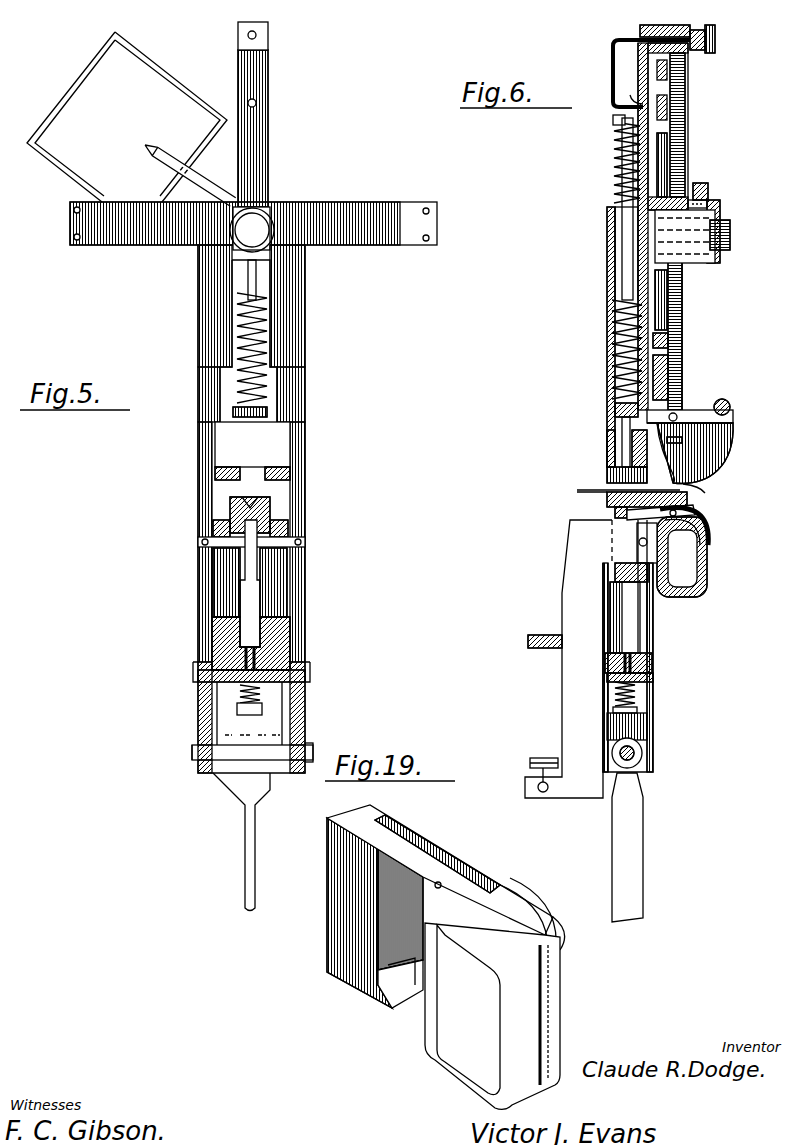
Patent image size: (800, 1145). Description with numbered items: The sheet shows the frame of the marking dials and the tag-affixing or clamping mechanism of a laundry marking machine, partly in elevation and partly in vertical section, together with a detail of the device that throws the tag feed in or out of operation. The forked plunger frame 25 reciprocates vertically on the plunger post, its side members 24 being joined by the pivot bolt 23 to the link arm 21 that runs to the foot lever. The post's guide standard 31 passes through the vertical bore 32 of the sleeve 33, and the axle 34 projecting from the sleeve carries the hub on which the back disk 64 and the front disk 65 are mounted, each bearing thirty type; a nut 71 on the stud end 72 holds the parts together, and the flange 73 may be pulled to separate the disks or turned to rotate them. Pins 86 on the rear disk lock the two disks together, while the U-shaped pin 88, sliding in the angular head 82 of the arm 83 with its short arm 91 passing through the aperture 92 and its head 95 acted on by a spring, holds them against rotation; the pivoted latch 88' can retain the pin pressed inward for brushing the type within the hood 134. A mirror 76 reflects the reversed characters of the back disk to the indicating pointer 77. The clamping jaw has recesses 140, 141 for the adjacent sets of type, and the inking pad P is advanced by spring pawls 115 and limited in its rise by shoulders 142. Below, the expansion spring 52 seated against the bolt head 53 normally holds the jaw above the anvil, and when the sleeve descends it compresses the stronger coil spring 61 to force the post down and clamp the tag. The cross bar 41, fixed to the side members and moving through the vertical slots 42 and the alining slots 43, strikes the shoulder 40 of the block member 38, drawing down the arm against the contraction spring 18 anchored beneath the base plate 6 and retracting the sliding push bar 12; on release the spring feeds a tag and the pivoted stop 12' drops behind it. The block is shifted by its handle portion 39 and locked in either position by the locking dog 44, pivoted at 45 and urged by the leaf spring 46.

In FIG. 6, the base plate 6 is at (535, 640).
In FIG. 6, the sliding push bar 12 is at (622, 475).
In FIG. 6, the pivoted stop 12' is at (613, 442).
In FIG. 6, the contraction spring 18 is at (540, 756).
In FIG. 5, the link arm 21 is at (253, 858).
In FIG. 6, the link arm 21 is at (630, 840).
In FIG. 5, the pivot bolt 23 is at (298, 750).
In FIG. 6, the pivot bolt 23 is at (642, 753).
In FIG. 5, the side members 24 is at (297, 442).
In FIG. 5, the plunger frame 25 is at (290, 270).
In FIG. 5, the guide standard 31 is at (248, 285).
In FIG. 6, the guide standard 31 is at (625, 287).
In FIG. 6, the vertical bore 32 is at (612, 263).
In FIG. 6, the sleeve 33 is at (607, 232).
In FIG. 5, the axle 34 is at (262, 212).
In FIG. 5, the block member 38 is at (240, 513).
In FIG. 19, the block member 38 is at (466, 918).
In FIG. 6, the handle portion 39 is at (708, 577).
In FIG. 19, the handle portion 39 is at (538, 1020).
In FIG. 5, the shoulder 40 is at (253, 570).
In FIG. 6, the shoulder 40 is at (647, 583).
In FIG. 19, the shoulder 40 is at (392, 975).
In FIG. 5, the cross bar 41 is at (273, 542).
In FIG. 6, the cross bar 41 is at (650, 545).
In FIG. 5, the vertical slots 42 is at (230, 630).
In FIG. 6, the vertical slots 42 is at (643, 632).
In FIG. 5, the alining slots 43 is at (222, 592).
In FIG. 5, the locking dog 44 is at (253, 510).
In FIG. 6, the locking dog 44 is at (706, 523).
In FIG. 19, the locking dog 44 is at (520, 897).
In FIG. 6, the pivot 45 is at (690, 509).
In FIG. 19, the pivot 45 is at (440, 880).
In FIG. 6, the leaf spring 46 is at (703, 545).
In FIG. 5, the expansion spring 52 is at (252, 719).
In FIG. 6, the expansion spring 52 is at (637, 688).
In FIG. 5, the bolt head 53 is at (240, 711).
In FIG. 6, the bolt head 53 is at (633, 710).
In FIG. 5, the coil spring 61 is at (243, 372).
In FIG. 6, the coil spring 61 is at (615, 360).
In FIG. 6, the back disk 64 is at (682, 310).
In FIG. 6, the front disk 65 is at (682, 332).
In FIG. 6, the nut 71 is at (720, 205).
In FIG. 6, the stud end 72 is at (730, 237).
In FIG. 6, the flange 73 is at (700, 183).
In FIG. 5, the mirror 76 is at (152, 64).
In FIG. 5, the indicating pointer 77 is at (143, 147).
In FIG. 5, the angular head 82 is at (270, 35).
In FIG. 5, the arm 83 is at (272, 125).
In FIG. 6, the pins 86 is at (682, 117).
In FIG. 6, the U-shaped pin 88 is at (646, 57).
In FIG. 6, the U-shaped latch 88' is at (723, 39).
In FIG. 6, the short arm 91 is at (635, 102).
In FIG. 5, the aperture 92 is at (250, 101).
In FIG. 6, the head 95 is at (716, 48).
In FIG. 6, the spring pawls 115 is at (722, 460).
In FIG. 6, the hood 134 is at (687, 125).
In FIG. 5, the recess 140 is at (215, 472).
In FIG. 5, the recess 141 is at (290, 472).
In FIG. 6, the shoulders 142 is at (730, 405).
In FIG. 6, the inking pad P is at (690, 410).
In FIG. 6, the tooth t is at (699, 485).